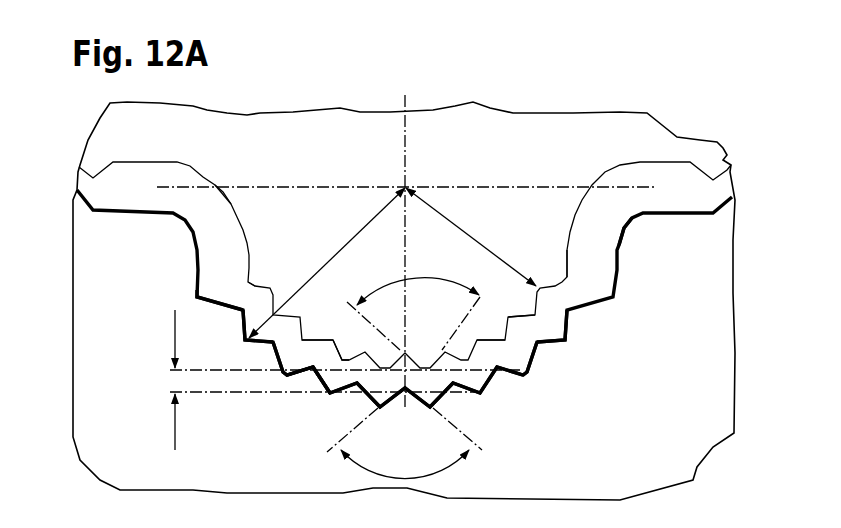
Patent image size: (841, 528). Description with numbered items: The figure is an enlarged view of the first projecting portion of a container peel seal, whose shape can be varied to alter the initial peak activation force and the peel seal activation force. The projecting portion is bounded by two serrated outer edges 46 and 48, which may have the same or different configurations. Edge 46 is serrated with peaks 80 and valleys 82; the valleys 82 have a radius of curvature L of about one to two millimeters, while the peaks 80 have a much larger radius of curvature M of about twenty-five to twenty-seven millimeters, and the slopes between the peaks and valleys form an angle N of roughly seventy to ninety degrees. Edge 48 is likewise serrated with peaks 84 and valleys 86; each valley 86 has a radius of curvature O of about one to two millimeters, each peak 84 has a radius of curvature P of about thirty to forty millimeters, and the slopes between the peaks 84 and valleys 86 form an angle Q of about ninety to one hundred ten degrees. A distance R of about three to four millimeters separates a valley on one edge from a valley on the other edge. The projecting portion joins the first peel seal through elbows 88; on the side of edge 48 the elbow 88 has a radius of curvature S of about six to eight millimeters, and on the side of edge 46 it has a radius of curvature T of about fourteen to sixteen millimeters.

The outer edge 46 is at (562, 263).
The outer edge 48 is at (509, 376).
The peaks 80 is at (332, 338).
The valleys 82 is at (347, 356).
The peaks 84 is at (196, 296).
The valleys 86 is at (242, 312).
The elbows 88 is at (228, 210).
The radius of curvature T is at (225, 183).
The radius of curvature L is at (254, 278).
The radius of curvature P is at (357, 233).
The radius of curvature M is at (470, 236).
The angle N is at (420, 278).
The angle Q is at (353, 465).
The distance R is at (175, 418).
The radius of curvature S is at (629, 231).
The radius of curvature O is at (311, 374).